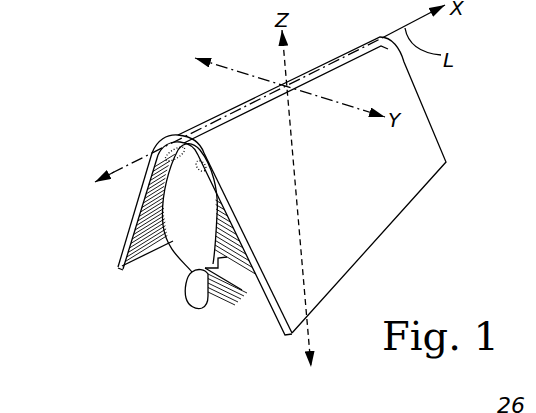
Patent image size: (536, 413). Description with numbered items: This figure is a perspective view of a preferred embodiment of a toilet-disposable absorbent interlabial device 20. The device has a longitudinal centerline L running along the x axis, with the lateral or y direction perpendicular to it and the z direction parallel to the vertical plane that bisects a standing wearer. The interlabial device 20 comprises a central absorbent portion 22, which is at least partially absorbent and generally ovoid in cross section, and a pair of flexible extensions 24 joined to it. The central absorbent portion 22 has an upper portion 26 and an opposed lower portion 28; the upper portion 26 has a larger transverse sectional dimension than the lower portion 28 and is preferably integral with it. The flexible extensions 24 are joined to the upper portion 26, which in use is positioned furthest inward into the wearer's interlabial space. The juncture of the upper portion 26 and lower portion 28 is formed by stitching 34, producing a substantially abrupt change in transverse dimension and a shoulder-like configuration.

The interlabial device 20 is at (145, 107).
The central absorbent portion 22 is at (187, 242).
The flexible extensions 24 is at (125, 242).
The upper portion 26 is at (185, 137).
The lower portion 28 is at (197, 298).
The stitching 34 is at (218, 260).